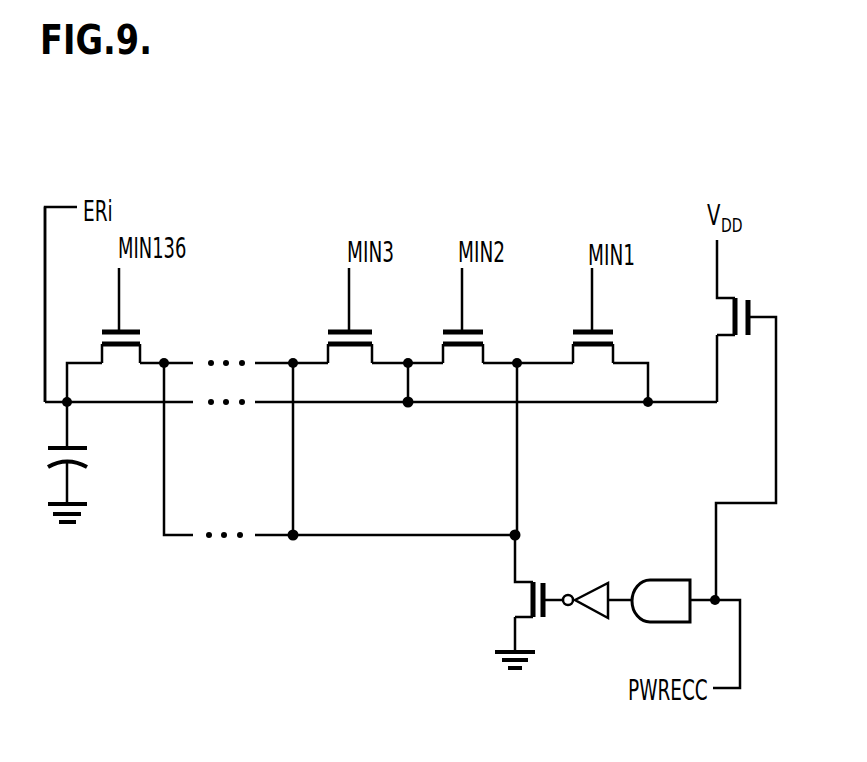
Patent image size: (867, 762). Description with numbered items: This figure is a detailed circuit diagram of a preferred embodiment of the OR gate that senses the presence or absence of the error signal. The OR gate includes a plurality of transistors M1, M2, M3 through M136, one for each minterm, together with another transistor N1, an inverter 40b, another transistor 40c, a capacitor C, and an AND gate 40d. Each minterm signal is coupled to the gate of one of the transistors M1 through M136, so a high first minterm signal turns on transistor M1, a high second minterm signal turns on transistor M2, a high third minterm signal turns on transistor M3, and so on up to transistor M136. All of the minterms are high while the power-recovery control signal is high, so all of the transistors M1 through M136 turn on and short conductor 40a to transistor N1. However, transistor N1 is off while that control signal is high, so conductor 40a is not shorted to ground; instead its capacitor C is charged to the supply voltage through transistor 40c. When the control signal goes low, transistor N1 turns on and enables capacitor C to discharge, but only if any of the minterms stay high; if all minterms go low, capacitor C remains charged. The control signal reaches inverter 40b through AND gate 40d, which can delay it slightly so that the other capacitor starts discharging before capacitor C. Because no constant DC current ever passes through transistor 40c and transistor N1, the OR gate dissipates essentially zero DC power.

The conductor 40a is at (69, 304).
The inverter 40b is at (597, 576).
The transistor 40c is at (746, 420).
The AND gate 40d is at (686, 611).
The transistor N1 is at (529, 601).
The transistor M1 is at (584, 335).
The transistor M2 is at (466, 315).
The transistor M3 is at (353, 315).
The transistor M136 is at (136, 335).
The capacitor C is at (85, 462).